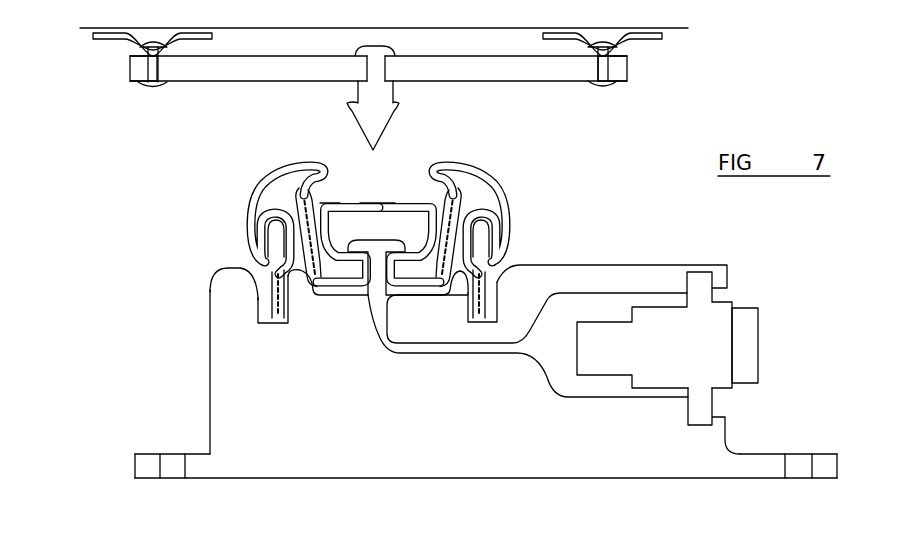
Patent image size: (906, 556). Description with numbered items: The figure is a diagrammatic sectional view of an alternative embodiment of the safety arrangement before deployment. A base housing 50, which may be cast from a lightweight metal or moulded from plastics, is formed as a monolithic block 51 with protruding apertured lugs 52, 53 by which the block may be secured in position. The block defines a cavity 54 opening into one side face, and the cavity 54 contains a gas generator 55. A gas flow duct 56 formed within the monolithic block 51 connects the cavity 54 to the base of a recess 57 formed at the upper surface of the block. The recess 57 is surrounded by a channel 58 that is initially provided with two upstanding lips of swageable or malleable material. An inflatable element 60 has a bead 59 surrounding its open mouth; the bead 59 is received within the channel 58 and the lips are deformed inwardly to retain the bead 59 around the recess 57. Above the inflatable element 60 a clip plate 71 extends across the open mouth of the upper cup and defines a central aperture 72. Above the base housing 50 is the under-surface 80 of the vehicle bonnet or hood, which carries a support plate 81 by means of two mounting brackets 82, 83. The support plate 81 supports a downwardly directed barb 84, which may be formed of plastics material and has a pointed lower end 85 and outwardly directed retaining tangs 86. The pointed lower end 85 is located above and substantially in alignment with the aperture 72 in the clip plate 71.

The base housing 50 is at (487, 492).
The monolithic block 51 is at (473, 318).
The apertured lug 52 is at (150, 477).
The apertured lug 53 is at (830, 470).
The cavity 54 is at (605, 310).
The gas generator 55 is at (720, 337).
The gas flow duct 56 is at (513, 347).
The recess 57 is at (352, 297).
The channel 58 is at (258, 307).
The bead 59 is at (257, 312).
The inflatable element 60 is at (323, 231).
The clip plate 71 is at (332, 202).
The central aperture 72 is at (377, 202).
The under-surface of the bonnet or hood 80 is at (675, 29).
The support plate 81 is at (560, 82).
The mounting bracket 82 is at (642, 34).
The mounting bracket 83 is at (121, 44).
The barb 84 is at (397, 93).
The pointed lower end 85 is at (395, 123).
The retaining tangs 86 is at (349, 100).